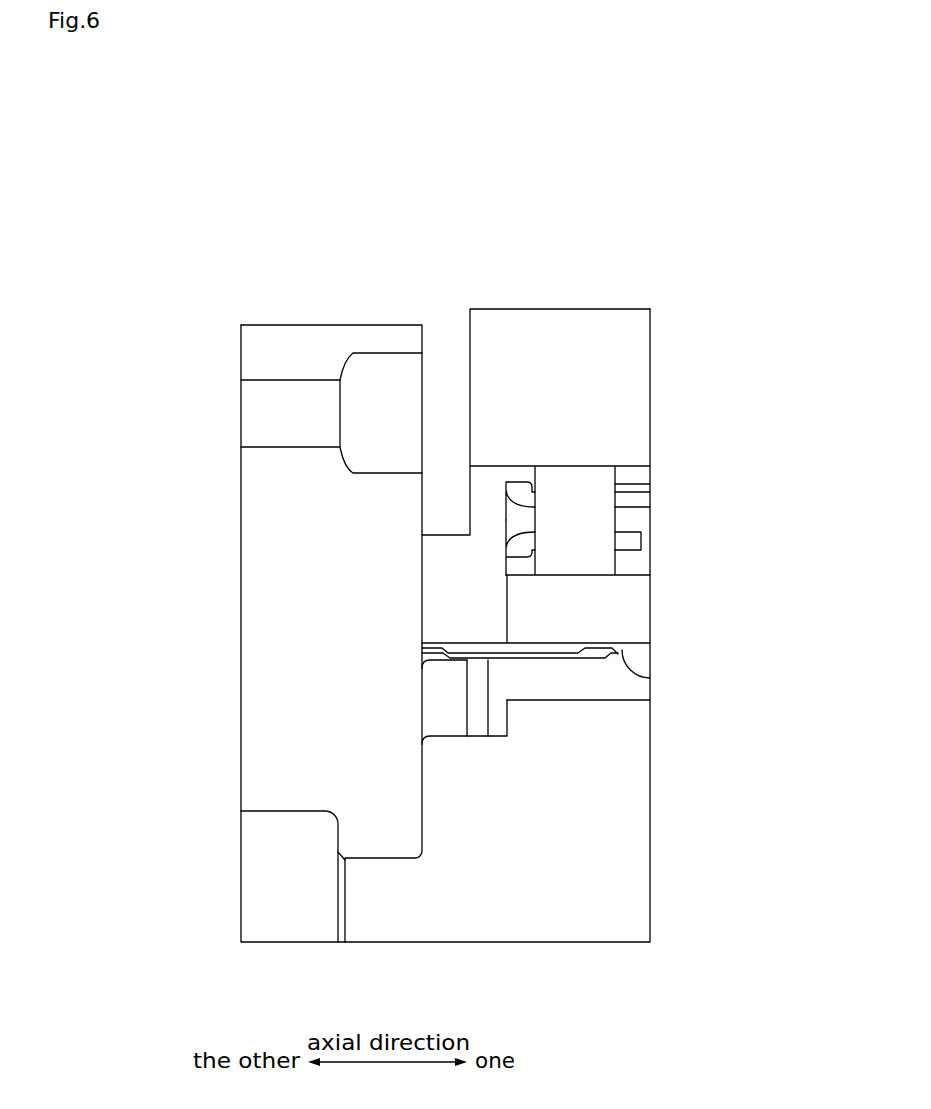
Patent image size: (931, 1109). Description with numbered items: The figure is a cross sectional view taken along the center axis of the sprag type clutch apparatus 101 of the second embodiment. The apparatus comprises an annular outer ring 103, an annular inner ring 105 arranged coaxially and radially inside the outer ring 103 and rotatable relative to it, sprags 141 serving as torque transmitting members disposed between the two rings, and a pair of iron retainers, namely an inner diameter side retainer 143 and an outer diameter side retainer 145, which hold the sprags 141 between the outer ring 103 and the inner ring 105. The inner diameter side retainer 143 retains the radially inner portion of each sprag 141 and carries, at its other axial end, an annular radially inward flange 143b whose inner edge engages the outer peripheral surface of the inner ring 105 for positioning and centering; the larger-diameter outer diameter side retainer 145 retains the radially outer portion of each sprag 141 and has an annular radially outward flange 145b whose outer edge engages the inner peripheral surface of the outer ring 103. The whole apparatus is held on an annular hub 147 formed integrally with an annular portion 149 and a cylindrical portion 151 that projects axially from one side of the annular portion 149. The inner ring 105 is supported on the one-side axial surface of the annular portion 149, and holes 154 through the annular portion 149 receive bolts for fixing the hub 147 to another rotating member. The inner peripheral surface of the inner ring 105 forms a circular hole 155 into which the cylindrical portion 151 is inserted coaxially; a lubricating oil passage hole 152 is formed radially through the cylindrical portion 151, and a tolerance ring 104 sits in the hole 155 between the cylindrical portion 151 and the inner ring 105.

The sprag type clutch apparatus 101 is at (651, 258).
The outer ring 103 is at (612, 396).
The tolerance ring 104 is at (558, 652).
The inner ring 105 is at (628, 621).
The sprag 141 is at (588, 522).
The inner diameter side retainer 143 is at (632, 542).
The radially inward flange 143b is at (518, 550).
The outer diameter side retainer 145 is at (633, 497).
The radially outward flange 145b is at (520, 492).
The hub 147 is at (256, 301).
The annular portion 149 is at (347, 340).
The cylindrical portion 151 is at (531, 685).
The lubricating oil passage hole 152 is at (478, 725).
The hole 154 is at (291, 425).
The hole 155 is at (622, 657).